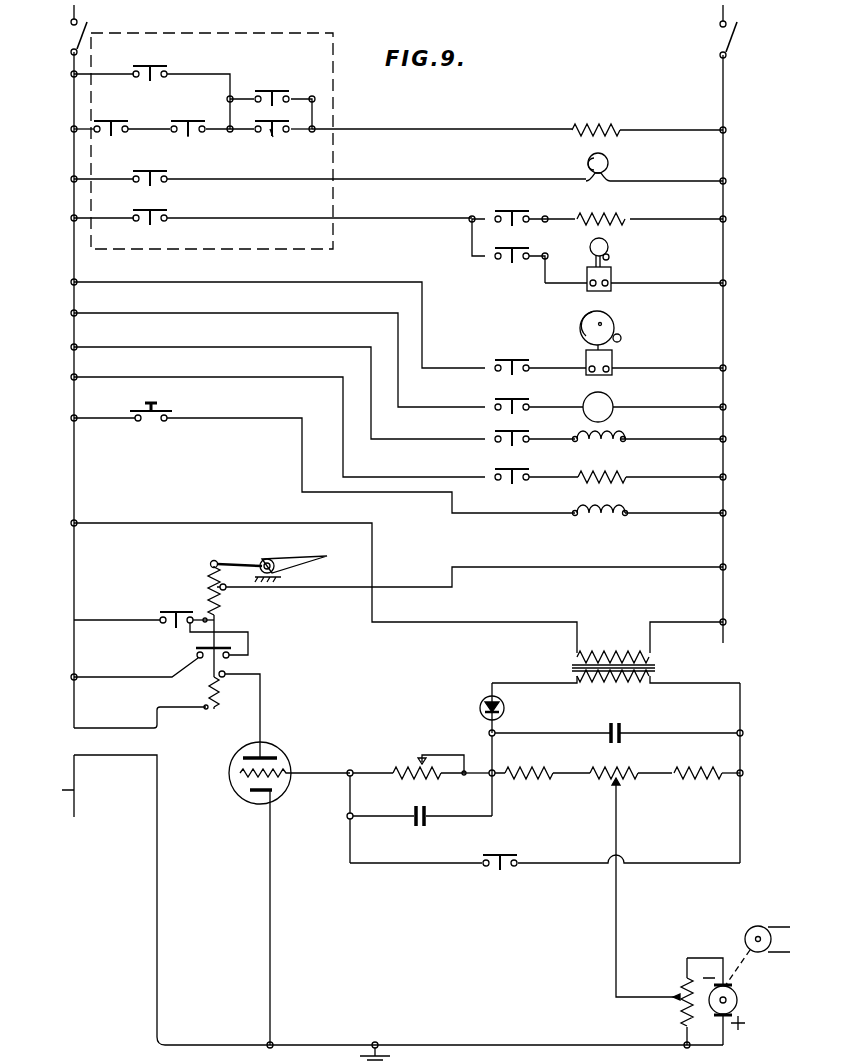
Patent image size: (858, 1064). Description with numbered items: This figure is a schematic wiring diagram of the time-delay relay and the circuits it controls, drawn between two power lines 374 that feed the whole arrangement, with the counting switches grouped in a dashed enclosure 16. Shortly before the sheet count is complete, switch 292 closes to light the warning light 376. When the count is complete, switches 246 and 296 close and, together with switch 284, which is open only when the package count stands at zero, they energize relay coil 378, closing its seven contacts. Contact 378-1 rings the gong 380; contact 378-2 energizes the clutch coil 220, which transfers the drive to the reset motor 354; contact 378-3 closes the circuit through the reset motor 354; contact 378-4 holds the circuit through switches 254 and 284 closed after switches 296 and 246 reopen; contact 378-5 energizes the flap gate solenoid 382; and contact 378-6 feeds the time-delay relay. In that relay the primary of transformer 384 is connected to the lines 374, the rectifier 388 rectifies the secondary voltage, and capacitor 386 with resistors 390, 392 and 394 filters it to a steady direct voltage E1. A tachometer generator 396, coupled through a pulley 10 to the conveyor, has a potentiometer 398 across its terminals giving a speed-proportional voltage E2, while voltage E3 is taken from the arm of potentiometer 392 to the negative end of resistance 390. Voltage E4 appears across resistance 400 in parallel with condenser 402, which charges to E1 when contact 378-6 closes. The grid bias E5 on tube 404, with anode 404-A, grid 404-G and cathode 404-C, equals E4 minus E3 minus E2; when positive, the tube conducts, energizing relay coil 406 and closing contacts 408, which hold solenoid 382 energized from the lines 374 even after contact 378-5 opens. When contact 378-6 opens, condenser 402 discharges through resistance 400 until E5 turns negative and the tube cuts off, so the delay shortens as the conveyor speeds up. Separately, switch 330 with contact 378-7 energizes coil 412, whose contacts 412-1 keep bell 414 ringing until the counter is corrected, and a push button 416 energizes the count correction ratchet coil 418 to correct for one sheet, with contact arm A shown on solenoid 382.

The pulley / driven machine 10 is at (770, 927).
The control unit (dashed enclosure) 16 is at (333, 115).
The clutch coil 220 is at (614, 433).
The switch 246 is at (195, 112).
The switch 254 is at (275, 90).
The switch 284 is at (272, 144).
The switch 292 is at (163, 172).
The switch 296 is at (117, 112).
The switch 330 is at (160, 210).
The reset motor 354 is at (612, 400).
The power lines 374 is at (72, 113).
The light 376 is at (608, 160).
The relay coil 378 is at (616, 128).
The relay contact 378-1 is at (496, 361).
The relay contact 378-2 is at (496, 434).
The relay contact 378-3 is at (496, 401).
The relay contact 378-4 is at (160, 66).
The relay contact 378-5 is at (496, 472).
The relay contact 378-6 is at (500, 875).
The relay contact 378-7 is at (496, 211).
The gong 380 is at (612, 364).
The flap gate solenoid 382 is at (616, 472).
The transformer 384 is at (612, 652).
The capacitor 386 is at (618, 724).
The rectifier 388 is at (504, 705).
The resistor 390 is at (512, 770).
The potentiometer 392 is at (625, 782).
The resistor 394 is at (698, 780).
The tachometer generator 396 is at (737, 1000).
The potentiometer 398 is at (676, 974).
The resistance 400 is at (412, 745).
The condenser 402 is at (418, 826).
The tube 404 is at (259, 885).
The tube anode 404-A is at (248, 756).
The cathode 404-C is at (258, 799).
The tube grid 404-G is at (240, 778).
The relay coil 406 is at (222, 683).
The contacts 408 is at (198, 654).
The coil 412 is at (618, 216).
The contacts 412-1 is at (504, 280).
The bell 414 is at (611, 276).
The push button switch 416 is at (158, 412).
The count correction ratchet coil 418 is at (618, 517).
The contact arm A is at (300, 553).
The voltage E-1 E1 is at (737, 752).
The voltage E-2 E2 is at (641, 1000).
The voltage E-3 E3 is at (614, 796).
The voltage E-4 E4 is at (490, 796).
The voltage E-5 E5 is at (350, 847).